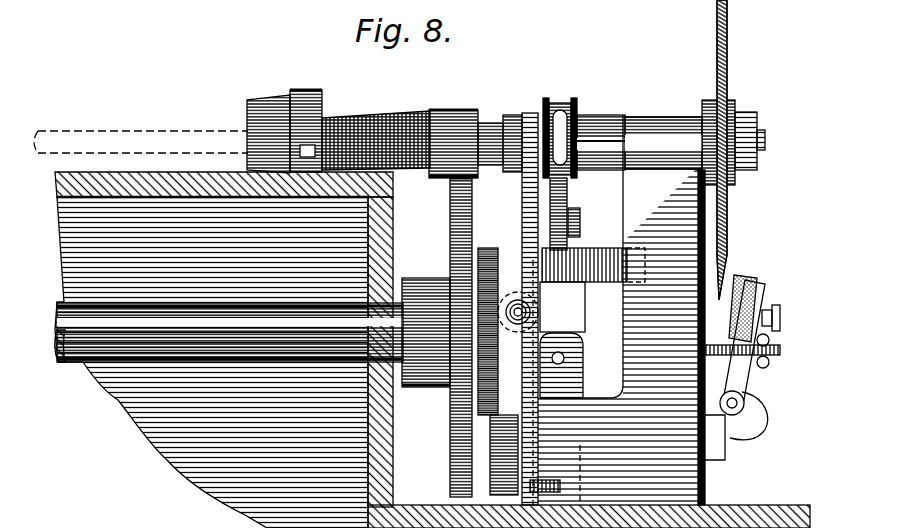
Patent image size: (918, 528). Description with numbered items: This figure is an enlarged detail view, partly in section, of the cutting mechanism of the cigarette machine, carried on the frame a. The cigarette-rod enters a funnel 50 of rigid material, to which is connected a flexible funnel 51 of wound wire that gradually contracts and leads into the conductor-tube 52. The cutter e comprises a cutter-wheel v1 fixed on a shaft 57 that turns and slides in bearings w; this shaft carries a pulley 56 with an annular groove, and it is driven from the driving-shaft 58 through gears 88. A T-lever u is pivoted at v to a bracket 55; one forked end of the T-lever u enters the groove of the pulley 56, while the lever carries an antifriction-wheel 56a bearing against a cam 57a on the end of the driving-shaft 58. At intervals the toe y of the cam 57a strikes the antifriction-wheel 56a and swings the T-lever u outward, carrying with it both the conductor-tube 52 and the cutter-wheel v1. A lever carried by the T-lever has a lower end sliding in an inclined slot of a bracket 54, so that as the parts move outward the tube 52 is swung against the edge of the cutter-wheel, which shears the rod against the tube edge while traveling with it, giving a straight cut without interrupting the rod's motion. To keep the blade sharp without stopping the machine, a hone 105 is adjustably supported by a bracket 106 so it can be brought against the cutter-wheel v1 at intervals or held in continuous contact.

The frame a is at (62, 185).
The driving-shaft 58 is at (80, 366).
The funnel 50 is at (252, 106).
The flexible funnel 51 is at (380, 116).
The cutter e is at (475, 129).
The gears 88 is at (451, 218).
The cam 57a is at (488, 247).
The toe y is at (500, 335).
The bracket 54 is at (492, 434).
The antifriction-wheel 56a is at (440, 390).
The T-lever u is at (556, 307).
The pulley 56 is at (568, 106).
The conductor-tube 52 is at (592, 122).
The shaft 57 is at (603, 136).
The bracket 55 is at (592, 256).
The pivot v is at (566, 356).
The bearings w is at (696, 298).
The cutter-wheel v1 is at (724, 66).
The bracket 106 is at (767, 297).
The hone 105 is at (750, 278).